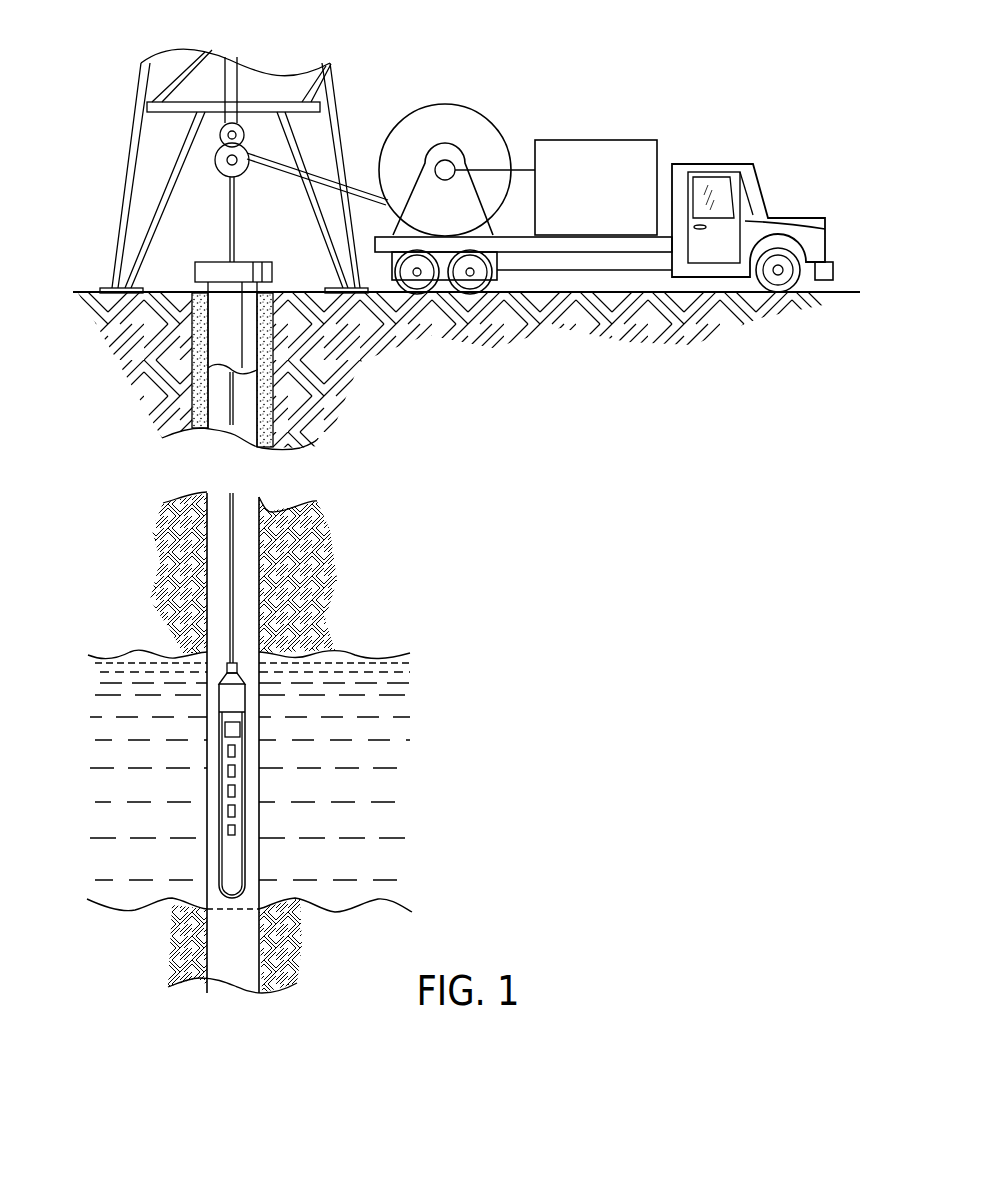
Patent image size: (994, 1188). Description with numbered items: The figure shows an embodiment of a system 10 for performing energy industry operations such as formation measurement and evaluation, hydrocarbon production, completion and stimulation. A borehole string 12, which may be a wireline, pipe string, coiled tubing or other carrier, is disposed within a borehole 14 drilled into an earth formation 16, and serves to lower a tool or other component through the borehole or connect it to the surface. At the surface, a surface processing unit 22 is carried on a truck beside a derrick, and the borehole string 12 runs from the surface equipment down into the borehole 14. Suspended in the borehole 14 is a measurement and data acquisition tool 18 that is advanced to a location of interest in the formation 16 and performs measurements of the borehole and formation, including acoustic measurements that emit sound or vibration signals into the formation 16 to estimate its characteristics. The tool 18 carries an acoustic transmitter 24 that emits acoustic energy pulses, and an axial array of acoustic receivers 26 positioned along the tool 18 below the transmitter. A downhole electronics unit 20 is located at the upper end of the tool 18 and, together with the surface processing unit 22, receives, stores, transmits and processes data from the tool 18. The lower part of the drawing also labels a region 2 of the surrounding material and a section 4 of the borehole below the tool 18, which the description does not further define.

The system 10 is at (445, 38).
The surface processing unit 22 is at (628, 140).
The borehole string 12 is at (213, 651).
The borehole 14 is at (248, 578).
The earth formation 16 is at (389, 793).
The downhole electronics unit 20 is at (238, 710).
The measurement and data acquisition tool 18 is at (245, 768).
The acoustic transmitter 24 is at (225, 728).
The acoustic receivers 26 is at (229, 830).
The formation 2 is at (213, 968).
The lower borehole section 4 is at (222, 950).